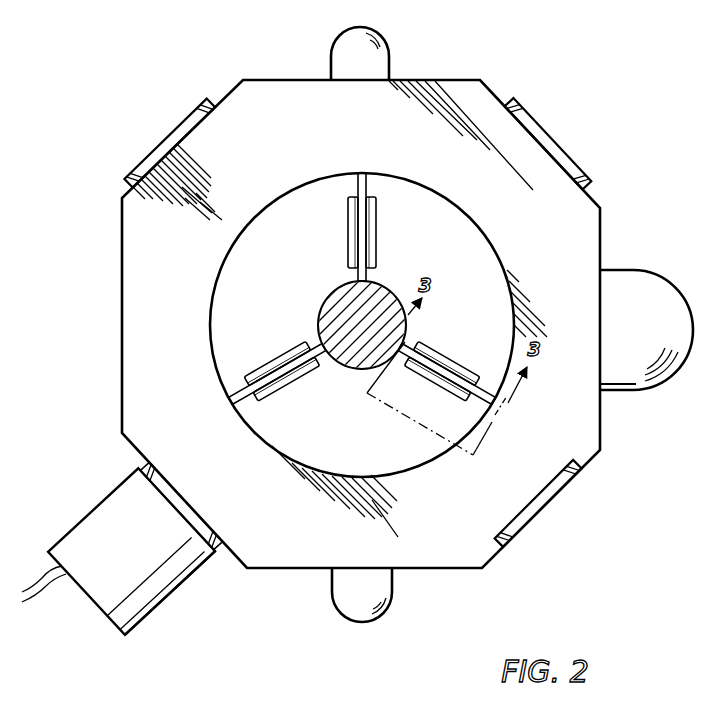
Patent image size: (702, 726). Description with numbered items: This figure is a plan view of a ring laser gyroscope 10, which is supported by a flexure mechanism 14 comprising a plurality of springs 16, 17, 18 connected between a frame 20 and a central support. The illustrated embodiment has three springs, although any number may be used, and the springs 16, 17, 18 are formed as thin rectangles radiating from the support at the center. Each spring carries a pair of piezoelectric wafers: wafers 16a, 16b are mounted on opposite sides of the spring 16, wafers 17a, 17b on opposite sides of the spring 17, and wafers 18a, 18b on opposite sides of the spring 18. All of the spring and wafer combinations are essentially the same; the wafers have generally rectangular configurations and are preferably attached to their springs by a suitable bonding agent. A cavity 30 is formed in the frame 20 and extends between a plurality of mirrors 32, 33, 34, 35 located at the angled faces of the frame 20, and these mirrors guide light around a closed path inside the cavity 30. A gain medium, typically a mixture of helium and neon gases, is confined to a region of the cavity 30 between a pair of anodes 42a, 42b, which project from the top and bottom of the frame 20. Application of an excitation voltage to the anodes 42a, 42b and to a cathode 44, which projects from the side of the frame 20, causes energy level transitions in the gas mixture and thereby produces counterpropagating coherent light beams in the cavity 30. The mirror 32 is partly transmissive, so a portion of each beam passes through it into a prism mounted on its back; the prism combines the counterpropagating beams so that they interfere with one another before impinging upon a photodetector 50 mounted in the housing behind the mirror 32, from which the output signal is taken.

The ring laser gyroscope 10 is at (112, 212).
The flexure mechanism 14 is at (195, 311).
The spring 16 is at (369, 276).
The piezoelectric wafer 16a is at (347, 233).
The piezoelectric wafer 16b is at (374, 216).
The spring 17 is at (418, 340).
The piezoelectric wafer 17a is at (463, 368).
The piezoelectric wafer 17b is at (440, 376).
The spring 18 is at (318, 342).
The piezoelectric wafer 18a is at (283, 377).
The piezoelectric wafer 18b is at (272, 357).
The frame 20 is at (133, 242).
The cavity 30 is at (467, 227).
The mirror 32 is at (145, 470).
The mirror 33 is at (190, 106).
The mirror 34 is at (538, 120).
The mirror 35 is at (570, 500).
The anode 42a is at (382, 54).
The anode 42b is at (330, 598).
The cathode 44 is at (668, 280).
The photodetector 50 is at (173, 593).